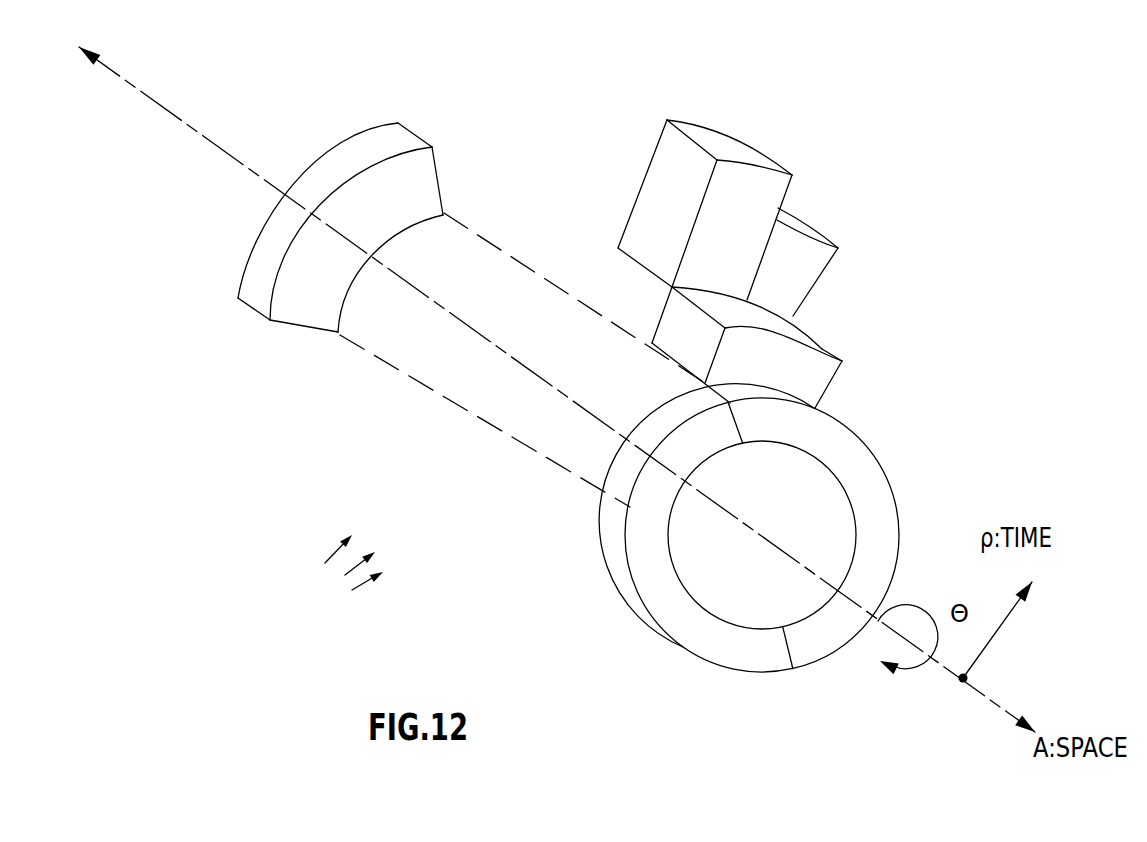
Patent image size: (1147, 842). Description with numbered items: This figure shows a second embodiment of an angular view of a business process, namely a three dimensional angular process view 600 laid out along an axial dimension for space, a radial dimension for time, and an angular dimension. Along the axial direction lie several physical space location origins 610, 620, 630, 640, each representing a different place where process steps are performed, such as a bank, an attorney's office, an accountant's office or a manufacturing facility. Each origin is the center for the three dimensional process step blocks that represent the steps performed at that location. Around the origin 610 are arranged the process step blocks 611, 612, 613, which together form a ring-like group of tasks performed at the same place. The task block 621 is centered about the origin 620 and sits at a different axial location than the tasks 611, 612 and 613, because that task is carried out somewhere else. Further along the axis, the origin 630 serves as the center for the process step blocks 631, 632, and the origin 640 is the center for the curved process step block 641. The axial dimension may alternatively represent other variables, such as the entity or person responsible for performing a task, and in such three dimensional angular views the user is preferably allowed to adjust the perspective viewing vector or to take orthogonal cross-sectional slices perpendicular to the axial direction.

The three dimensional angular process view 600 is at (338, 597).
The physical space location origin 610 is at (708, 528).
The three dimensional process step block 611 is at (784, 504).
The three dimensional process step block 612 is at (846, 644).
The three dimensional process step block 613 is at (762, 662).
The physical space location origin 620 is at (602, 403).
The three dimensional process step block 621 is at (772, 375).
The physical space location origin 630 is at (565, 294).
The three dimensional process step block 631 is at (754, 235).
The three dimensional process step block 632 is at (806, 287).
The physical space location origin 640 is at (334, 266).
The three dimensional process step block 641 is at (396, 222).